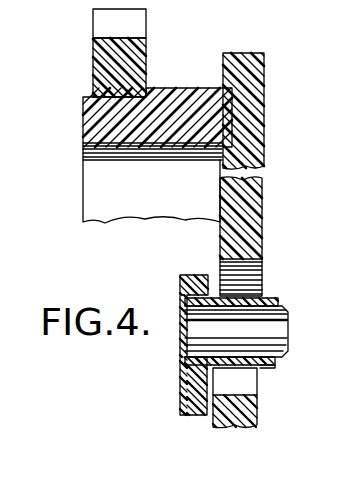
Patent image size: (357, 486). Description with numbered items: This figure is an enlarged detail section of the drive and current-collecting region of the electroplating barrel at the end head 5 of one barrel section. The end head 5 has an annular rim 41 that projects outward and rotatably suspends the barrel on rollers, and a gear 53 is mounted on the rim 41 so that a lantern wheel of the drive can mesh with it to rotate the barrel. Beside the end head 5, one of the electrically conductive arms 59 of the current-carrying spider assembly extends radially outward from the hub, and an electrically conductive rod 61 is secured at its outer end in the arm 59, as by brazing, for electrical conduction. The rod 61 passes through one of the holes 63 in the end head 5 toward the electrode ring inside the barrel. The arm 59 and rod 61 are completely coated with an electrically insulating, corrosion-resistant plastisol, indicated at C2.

The gear 53 is at (147, 17).
The annular rim 41 is at (83, 129).
The end head 5 is at (265, 80).
The holes 63 is at (261, 273).
The electrically conductive rods 61 is at (281, 325).
The electrically conductive arms 59 is at (182, 381).
The electrical insulation and corrosion-resistant coating C2 is at (267, 366).